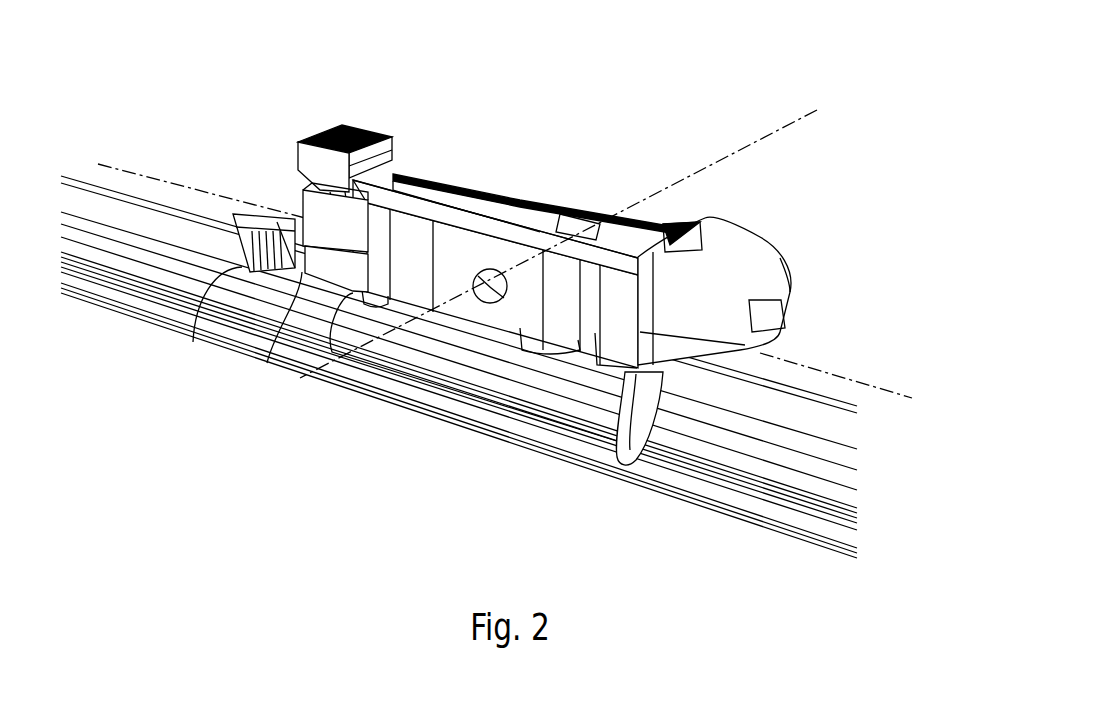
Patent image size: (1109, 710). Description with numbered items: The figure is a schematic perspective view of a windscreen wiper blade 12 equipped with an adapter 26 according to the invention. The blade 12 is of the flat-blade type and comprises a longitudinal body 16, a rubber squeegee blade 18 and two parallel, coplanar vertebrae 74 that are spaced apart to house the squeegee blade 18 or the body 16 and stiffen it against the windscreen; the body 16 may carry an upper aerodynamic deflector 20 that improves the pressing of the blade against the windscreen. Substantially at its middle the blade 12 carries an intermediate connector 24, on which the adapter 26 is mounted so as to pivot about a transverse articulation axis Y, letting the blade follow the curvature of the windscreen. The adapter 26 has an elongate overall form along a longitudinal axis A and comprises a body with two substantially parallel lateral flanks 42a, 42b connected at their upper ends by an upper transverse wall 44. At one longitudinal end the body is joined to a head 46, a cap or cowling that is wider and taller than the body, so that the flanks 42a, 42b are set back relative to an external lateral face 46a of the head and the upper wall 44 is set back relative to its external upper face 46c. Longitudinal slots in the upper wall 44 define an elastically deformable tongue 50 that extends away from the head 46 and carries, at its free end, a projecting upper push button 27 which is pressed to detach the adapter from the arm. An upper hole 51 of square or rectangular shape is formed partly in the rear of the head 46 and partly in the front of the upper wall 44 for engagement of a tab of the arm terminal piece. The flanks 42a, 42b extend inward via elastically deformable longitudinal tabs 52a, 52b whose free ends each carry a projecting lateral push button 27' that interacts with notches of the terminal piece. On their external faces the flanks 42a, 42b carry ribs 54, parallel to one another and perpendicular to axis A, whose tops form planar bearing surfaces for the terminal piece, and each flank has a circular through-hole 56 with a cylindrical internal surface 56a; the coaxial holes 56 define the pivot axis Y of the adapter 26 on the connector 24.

The blade 12 is at (499, 356).
The longitudinal body 16 is at (827, 387).
The squeegee blade 18 is at (818, 553).
The upper aerodynamic deflector 20 is at (832, 420).
The intermediate connector 24 is at (404, 357).
The adapter 26 is at (548, 306).
The push button 27 is at (345, 128).
The lateral push button 27' is at (265, 265).
The lateral flank 42a is at (500, 314).
The lateral flank 42b is at (529, 186).
The upper transverse wall 44 is at (592, 217).
The head 46 is at (774, 359).
The external lateral face 46a is at (681, 352).
The external upper face 46c is at (760, 236).
The longitudinal tongue 50 is at (414, 185).
The upper hole 51 is at (678, 226).
The longitudinal tab 52a is at (300, 274).
The longitudinal tab 52b is at (393, 178).
The rib 54 is at (470, 196).
The through-hole 56 is at (441, 308).
The cylindrical internal surface 56a is at (525, 206).
The vertebra 74 is at (838, 494).
The longitudinal axis A is at (123, 170).
The articulation axis Y is at (793, 122).